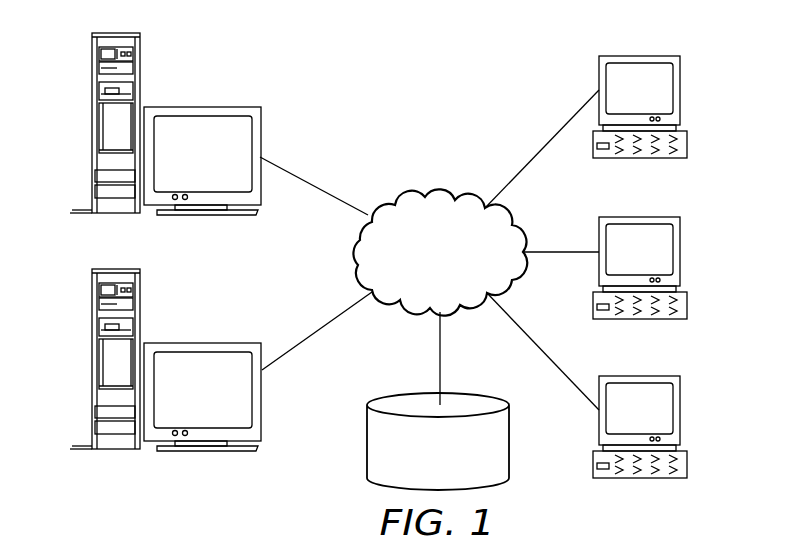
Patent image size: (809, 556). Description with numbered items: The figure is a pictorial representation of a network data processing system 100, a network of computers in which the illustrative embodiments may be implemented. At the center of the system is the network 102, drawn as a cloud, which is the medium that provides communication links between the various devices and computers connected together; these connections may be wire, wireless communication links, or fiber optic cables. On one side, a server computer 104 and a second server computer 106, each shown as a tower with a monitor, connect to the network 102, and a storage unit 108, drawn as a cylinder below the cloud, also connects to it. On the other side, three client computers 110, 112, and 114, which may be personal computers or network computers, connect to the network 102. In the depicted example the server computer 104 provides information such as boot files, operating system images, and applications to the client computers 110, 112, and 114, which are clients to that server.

The network data processing system 100 is at (500, 74).
The network 102 is at (408, 197).
The server computer 104 is at (92, 123).
The server computer 106 is at (92, 359).
The storage unit 108 is at (367, 450).
The client computer 110 is at (680, 90).
The client computer 112 is at (680, 252).
The client computer 114 is at (680, 410).